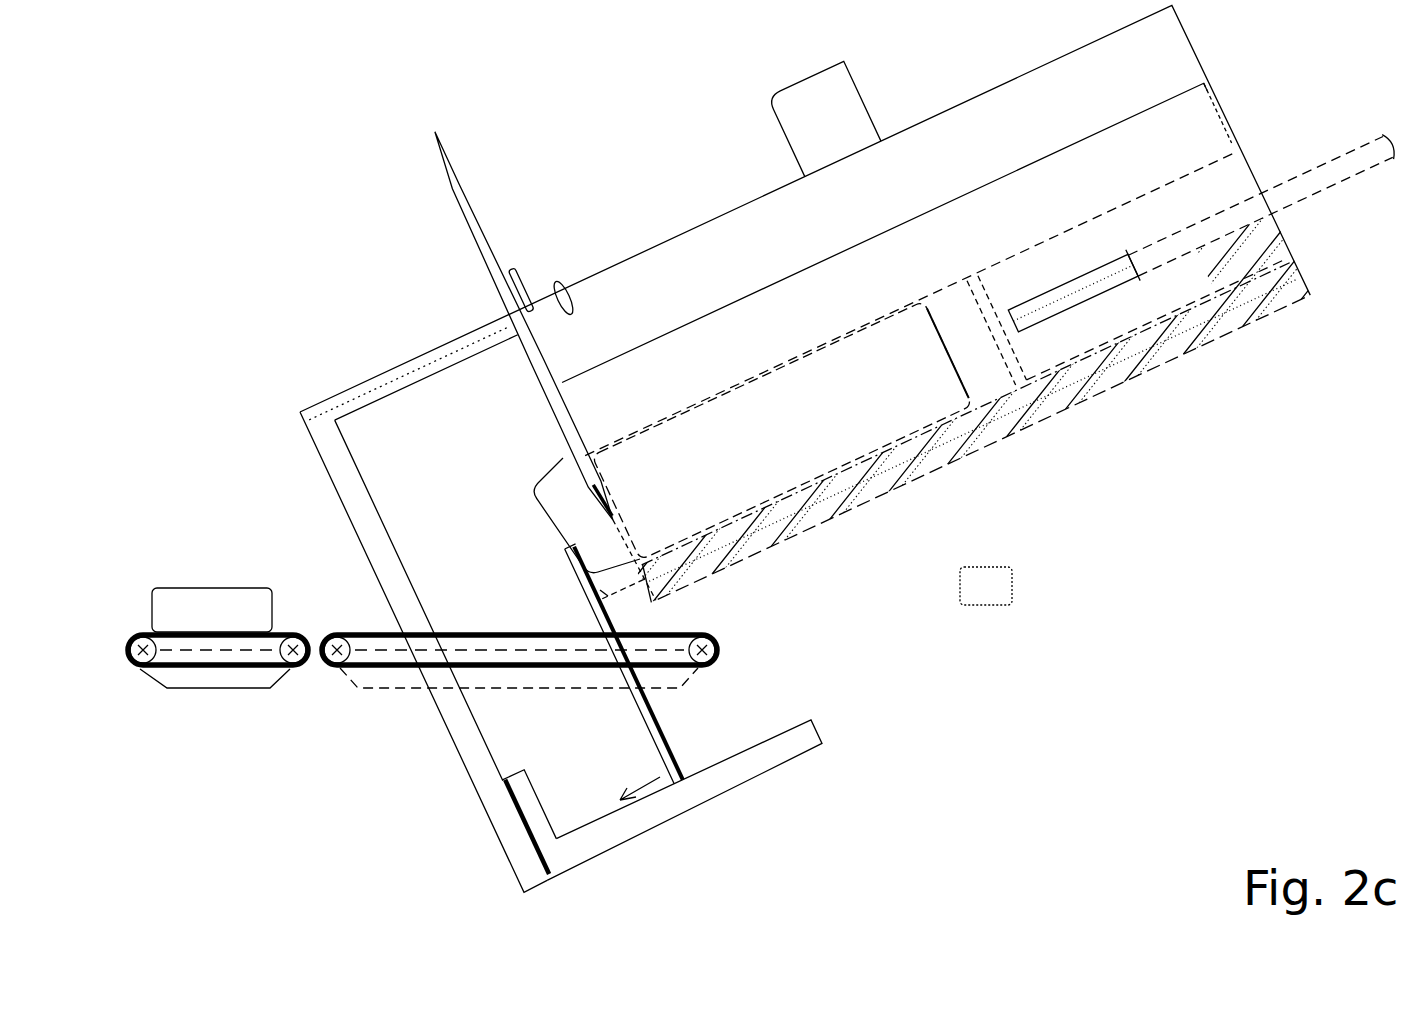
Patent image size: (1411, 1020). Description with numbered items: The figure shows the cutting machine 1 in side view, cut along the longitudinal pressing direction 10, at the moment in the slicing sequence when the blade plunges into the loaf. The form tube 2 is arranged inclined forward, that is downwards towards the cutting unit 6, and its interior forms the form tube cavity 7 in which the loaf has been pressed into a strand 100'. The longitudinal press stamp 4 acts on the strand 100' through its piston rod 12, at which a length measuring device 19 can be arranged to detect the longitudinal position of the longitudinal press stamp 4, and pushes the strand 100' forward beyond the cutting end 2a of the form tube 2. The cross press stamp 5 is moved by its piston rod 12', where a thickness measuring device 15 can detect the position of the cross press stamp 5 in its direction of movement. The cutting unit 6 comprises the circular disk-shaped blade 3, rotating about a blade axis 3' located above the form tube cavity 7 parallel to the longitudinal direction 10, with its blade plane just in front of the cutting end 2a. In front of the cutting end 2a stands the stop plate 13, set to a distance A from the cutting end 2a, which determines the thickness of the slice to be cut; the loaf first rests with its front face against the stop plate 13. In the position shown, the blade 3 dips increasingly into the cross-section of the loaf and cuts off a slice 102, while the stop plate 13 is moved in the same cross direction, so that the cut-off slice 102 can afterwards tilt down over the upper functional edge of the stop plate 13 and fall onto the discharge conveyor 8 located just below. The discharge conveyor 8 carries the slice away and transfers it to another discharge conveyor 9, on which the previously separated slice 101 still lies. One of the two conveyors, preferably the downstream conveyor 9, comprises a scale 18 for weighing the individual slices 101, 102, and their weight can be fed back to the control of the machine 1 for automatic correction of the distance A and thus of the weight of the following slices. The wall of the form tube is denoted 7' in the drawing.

The cutting machine 1 is at (333, 165).
The form tube 2 is at (803, 351).
The cutting end 2a is at (515, 266).
The blade 3 is at (541, 368).
The blade axis 3' is at (409, 351).
The longitudinal press stamp 4 is at (996, 330).
The cross press stamp 5 is at (884, 236).
The cutting unit 6 is at (331, 255).
The form tube cavity 7 is at (983, 385).
The wall lining 7' is at (970, 422).
The discharge conveyor 8 is at (746, 630).
The discharge conveyor 9 is at (143, 636).
The longitudinal pressing direction 10 is at (1150, 257).
The piston rod 12 is at (1268, 205).
The piston rod 12' is at (824, 118).
The stop plate 13 is at (650, 732).
The thickness measuring device 15 is at (603, 881).
The scale 18 is at (356, 682).
The length measuring device 19 is at (340, 490).
The strand 100' is at (782, 430).
The slice 101 is at (212, 610).
The slice 102 is at (555, 487).
The distance A is at (621, 609).